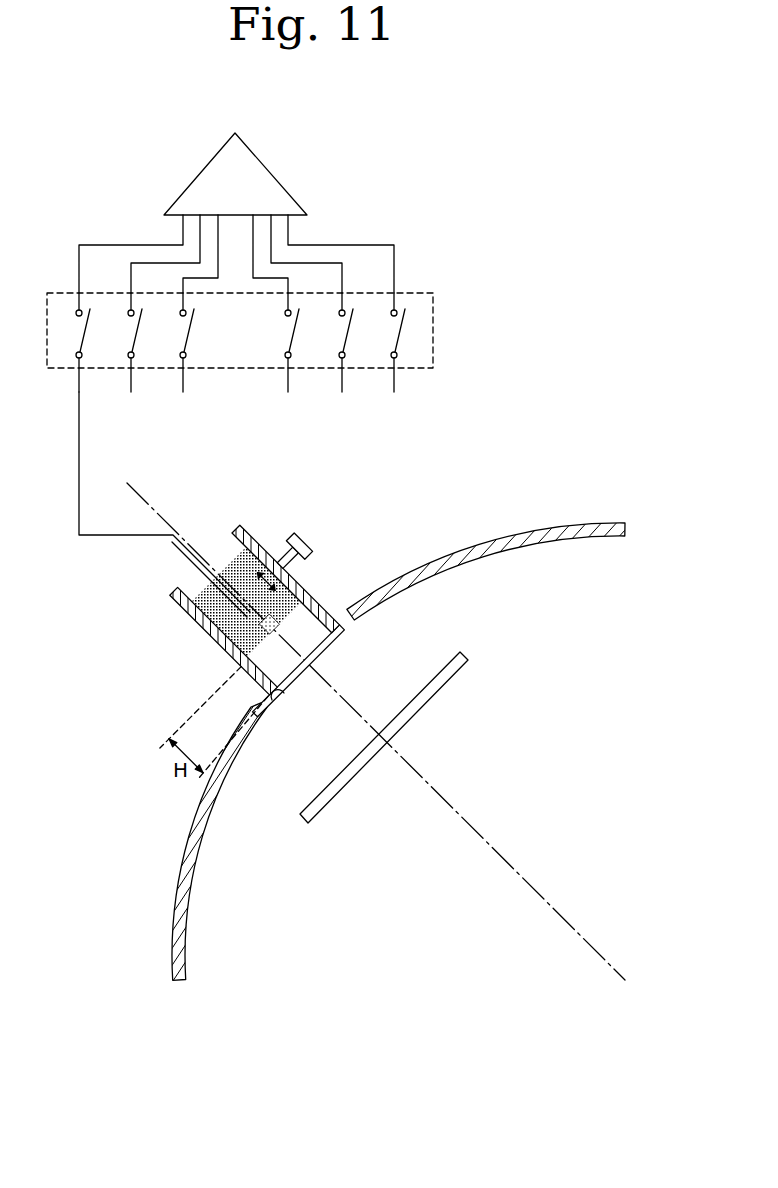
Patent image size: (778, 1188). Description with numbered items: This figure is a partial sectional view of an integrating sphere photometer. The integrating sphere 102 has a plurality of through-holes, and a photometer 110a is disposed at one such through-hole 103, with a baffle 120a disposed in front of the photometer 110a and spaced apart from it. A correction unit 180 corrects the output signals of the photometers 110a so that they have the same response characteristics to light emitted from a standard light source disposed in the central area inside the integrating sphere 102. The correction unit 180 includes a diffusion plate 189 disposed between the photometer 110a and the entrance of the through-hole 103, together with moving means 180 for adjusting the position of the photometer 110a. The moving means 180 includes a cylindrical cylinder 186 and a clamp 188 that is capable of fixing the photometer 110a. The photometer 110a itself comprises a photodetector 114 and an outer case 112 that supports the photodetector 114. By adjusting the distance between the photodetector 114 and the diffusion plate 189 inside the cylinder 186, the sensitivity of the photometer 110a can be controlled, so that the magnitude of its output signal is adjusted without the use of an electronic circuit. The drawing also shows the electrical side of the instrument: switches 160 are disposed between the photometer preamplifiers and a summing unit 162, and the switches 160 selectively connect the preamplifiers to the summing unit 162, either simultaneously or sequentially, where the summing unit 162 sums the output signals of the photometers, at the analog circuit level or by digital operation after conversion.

The integrating sphere 102 is at (176, 885).
The through-hole 103 is at (283, 695).
The photometer 110a is at (167, 621).
The outer case 112 is at (218, 615).
The photodetector 114 is at (259, 630).
The baffle 120a is at (438, 690).
The switches 160 is at (433, 330).
The summing unit 162 is at (272, 170).
The correction unit (moving means) 180 is at (219, 584).
The cylindrical cylinder 186 is at (316, 604).
The clamp 188 is at (306, 530).
The diffusion plate 189 is at (327, 653).